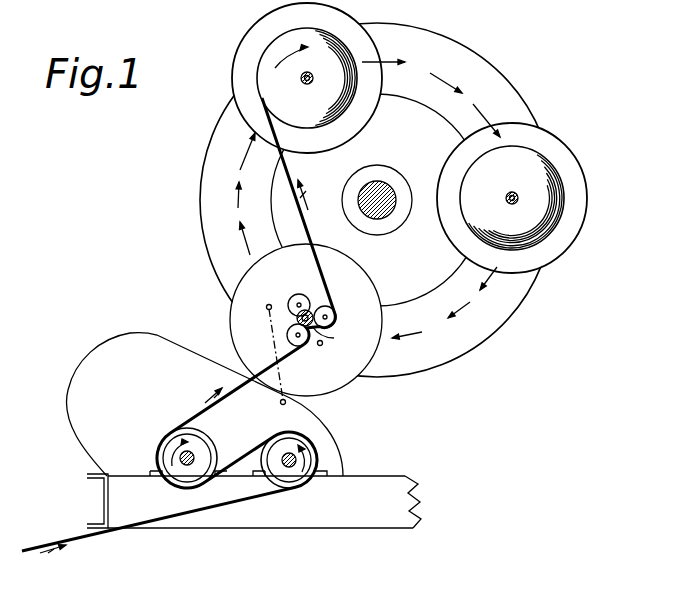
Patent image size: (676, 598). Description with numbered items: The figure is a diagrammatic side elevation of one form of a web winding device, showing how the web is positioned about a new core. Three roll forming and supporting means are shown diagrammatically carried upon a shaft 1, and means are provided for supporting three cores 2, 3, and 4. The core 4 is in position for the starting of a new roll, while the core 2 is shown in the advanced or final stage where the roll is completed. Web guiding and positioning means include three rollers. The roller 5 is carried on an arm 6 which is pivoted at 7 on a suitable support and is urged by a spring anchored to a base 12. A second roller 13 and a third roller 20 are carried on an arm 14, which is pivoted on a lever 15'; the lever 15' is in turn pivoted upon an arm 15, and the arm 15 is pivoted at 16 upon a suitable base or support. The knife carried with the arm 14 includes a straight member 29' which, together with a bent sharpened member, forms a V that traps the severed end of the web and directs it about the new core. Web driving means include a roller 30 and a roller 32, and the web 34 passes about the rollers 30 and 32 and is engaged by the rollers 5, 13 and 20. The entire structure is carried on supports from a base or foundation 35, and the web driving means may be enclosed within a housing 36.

The shaft 1 is at (381, 184).
The core 2 is at (307, 86).
The core 3 is at (517, 192).
The core 4 is at (330, 336).
The roller 5 is at (282, 336).
The arm 6 is at (300, 343).
The pivot 7 is at (322, 346).
The base 12 is at (350, 477).
The second roller 13 is at (300, 294).
The arm 14 is at (326, 310).
The arm 15 is at (264, 354).
The lever 15' is at (258, 294).
The pivot 16 is at (281, 403).
The third roller 20 is at (337, 316).
The straight member 29' is at (302, 221).
The roller 30 is at (208, 446).
The roller 32 is at (268, 484).
The web 34 is at (107, 535).
The base or foundation 35 is at (100, 498).
The housing 36 is at (141, 346).